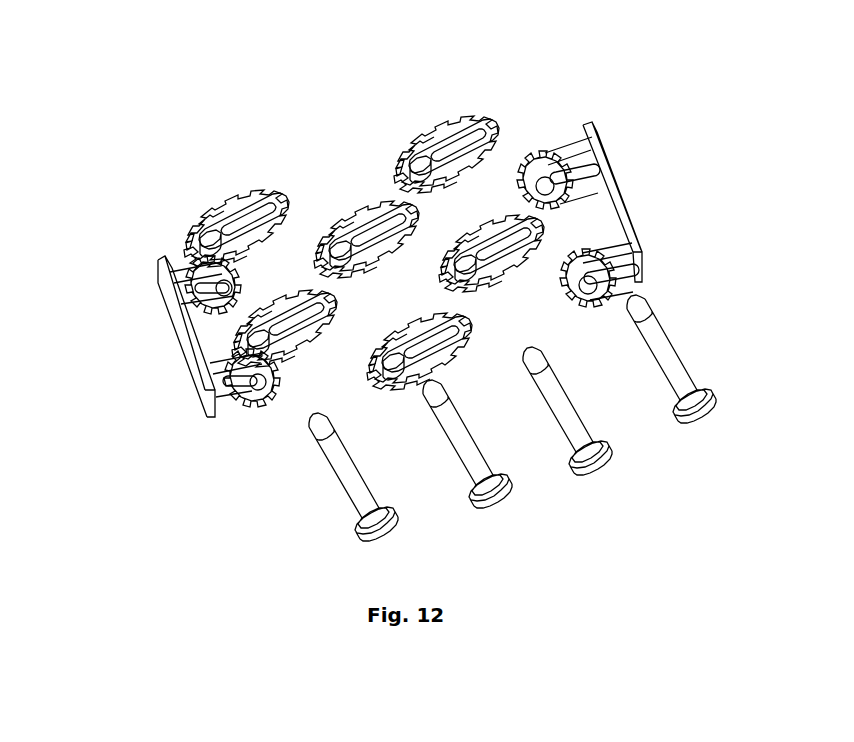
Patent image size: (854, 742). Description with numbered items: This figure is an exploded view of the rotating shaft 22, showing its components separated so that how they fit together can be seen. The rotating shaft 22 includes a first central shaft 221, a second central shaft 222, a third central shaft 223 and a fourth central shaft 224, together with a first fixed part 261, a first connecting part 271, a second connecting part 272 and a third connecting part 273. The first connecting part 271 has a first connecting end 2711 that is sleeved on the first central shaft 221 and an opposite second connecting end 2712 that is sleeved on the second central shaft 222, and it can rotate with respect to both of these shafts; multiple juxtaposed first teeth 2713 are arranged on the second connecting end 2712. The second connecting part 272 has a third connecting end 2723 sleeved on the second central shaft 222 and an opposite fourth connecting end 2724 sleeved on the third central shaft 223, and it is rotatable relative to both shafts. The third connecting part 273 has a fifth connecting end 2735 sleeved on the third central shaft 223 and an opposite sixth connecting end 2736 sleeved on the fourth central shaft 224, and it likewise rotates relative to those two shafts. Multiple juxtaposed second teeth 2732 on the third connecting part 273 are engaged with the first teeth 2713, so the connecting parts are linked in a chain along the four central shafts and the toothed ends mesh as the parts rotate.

The rotating shaft 22 is at (378, 34).
The first central shaft 221 is at (658, 355).
The second central shaft 222 is at (563, 407).
The third central shaft 223 is at (462, 446).
The fourth central shaft 224 is at (357, 485).
The first fixed part 261 is at (600, 130).
The first connecting part 271 is at (507, 119).
The first connecting end 2711 is at (492, 137).
The second connecting end 2712 is at (420, 150).
The first teeth 2713 is at (405, 182).
The second connecting part 272 is at (419, 366).
The third connecting end 2723 is at (470, 335).
The fourth connecting end 2724 is at (382, 370).
The third connecting part 273 is at (178, 184).
The second teeth 2732 is at (283, 188).
The fifth connecting end 2735 is at (248, 196).
The sixth connecting end 2736 is at (206, 206).